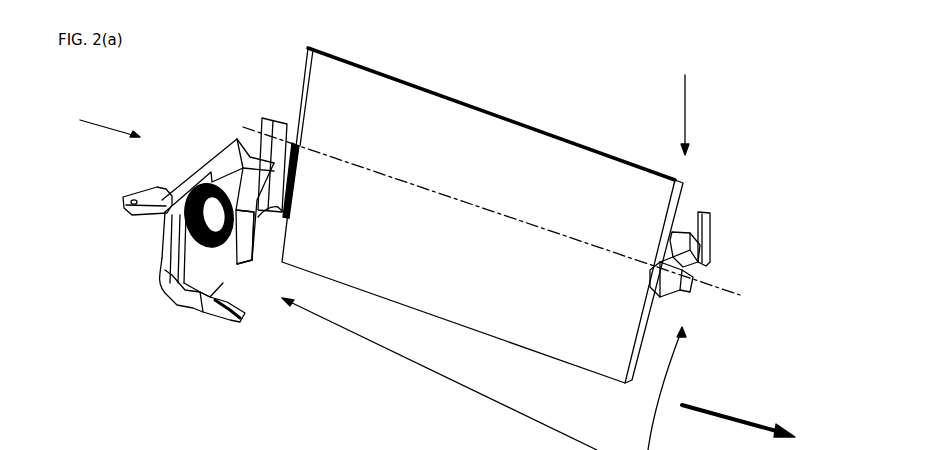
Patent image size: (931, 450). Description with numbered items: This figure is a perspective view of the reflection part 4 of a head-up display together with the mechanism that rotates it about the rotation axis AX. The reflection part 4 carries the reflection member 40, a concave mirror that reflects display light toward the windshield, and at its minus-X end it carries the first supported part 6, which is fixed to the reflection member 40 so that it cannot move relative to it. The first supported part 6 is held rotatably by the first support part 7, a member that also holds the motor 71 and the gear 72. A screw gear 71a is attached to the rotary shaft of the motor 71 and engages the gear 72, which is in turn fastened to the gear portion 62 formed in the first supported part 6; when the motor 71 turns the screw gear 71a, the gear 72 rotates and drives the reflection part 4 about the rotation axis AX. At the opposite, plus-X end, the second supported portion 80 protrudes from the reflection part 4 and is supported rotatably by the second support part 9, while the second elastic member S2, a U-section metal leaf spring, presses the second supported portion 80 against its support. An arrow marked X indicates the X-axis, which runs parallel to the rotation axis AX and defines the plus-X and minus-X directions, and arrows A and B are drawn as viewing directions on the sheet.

The reflection part 4 is at (476, 90).
The reflection member 40 is at (538, 133).
The first supported part 6 is at (267, 120).
The first support part 7 is at (213, 160).
The second support part 9 is at (705, 214).
The gear portion 62 is at (243, 252).
The motor 71 is at (233, 320).
The screw gear 71a is at (180, 308).
The gear 72 is at (201, 294).
The second supported portion 80 is at (697, 293).
The second elastic member S2 is at (697, 275).
The rotation axis AX is at (700, 282).
The direction A is at (101, 124).
The direction B is at (684, 102).
The X-axis X is at (738, 427).